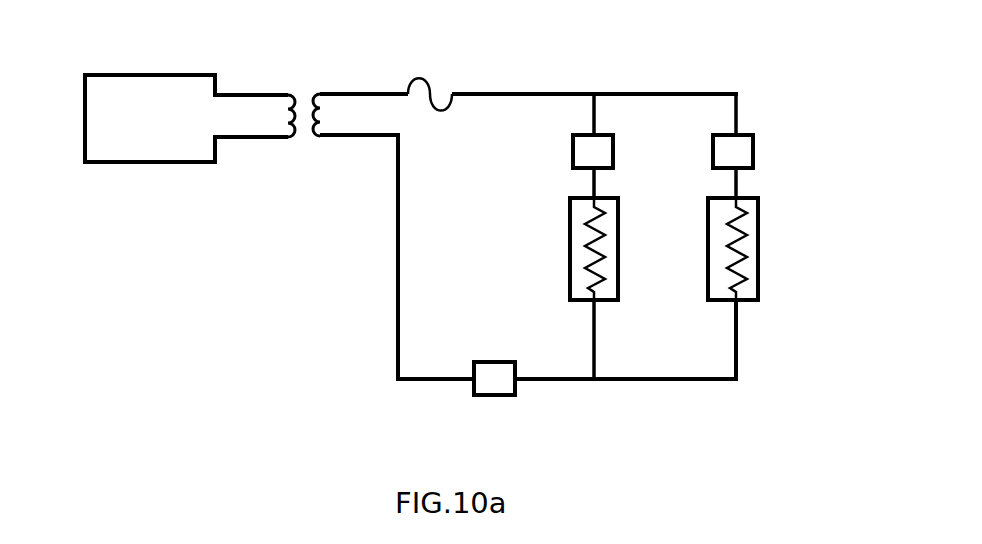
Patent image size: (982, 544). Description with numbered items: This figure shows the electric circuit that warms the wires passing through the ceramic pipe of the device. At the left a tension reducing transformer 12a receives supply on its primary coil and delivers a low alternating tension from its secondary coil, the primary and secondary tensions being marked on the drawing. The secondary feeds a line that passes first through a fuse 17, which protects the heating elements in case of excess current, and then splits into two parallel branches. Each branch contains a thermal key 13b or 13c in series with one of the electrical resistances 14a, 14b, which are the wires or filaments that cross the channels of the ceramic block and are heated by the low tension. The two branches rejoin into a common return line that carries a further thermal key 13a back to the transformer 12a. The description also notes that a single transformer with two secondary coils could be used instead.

The tension reducing transformer 12a is at (303, 165).
The fuse 17 is at (455, 80).
The thermal key 13a is at (492, 401).
The thermal key 13b is at (555, 151).
The thermal key 13c is at (701, 151).
The electrical resistance 14a is at (548, 253).
The electrical resistance 14b is at (772, 251).